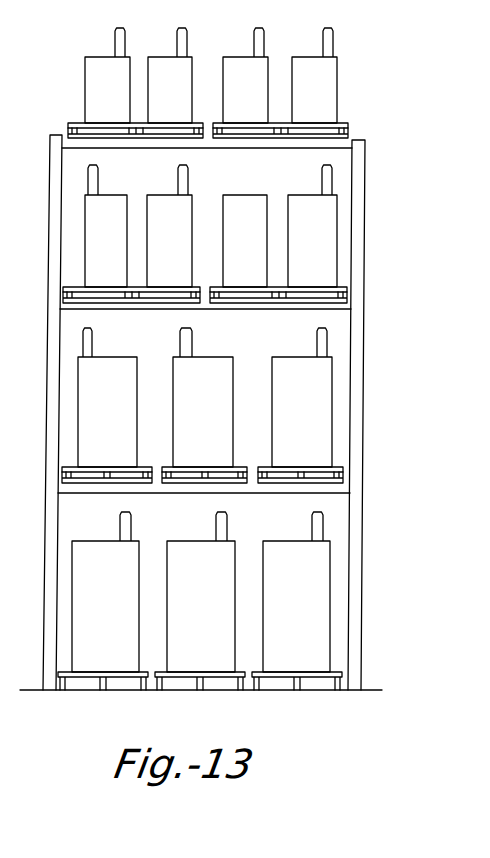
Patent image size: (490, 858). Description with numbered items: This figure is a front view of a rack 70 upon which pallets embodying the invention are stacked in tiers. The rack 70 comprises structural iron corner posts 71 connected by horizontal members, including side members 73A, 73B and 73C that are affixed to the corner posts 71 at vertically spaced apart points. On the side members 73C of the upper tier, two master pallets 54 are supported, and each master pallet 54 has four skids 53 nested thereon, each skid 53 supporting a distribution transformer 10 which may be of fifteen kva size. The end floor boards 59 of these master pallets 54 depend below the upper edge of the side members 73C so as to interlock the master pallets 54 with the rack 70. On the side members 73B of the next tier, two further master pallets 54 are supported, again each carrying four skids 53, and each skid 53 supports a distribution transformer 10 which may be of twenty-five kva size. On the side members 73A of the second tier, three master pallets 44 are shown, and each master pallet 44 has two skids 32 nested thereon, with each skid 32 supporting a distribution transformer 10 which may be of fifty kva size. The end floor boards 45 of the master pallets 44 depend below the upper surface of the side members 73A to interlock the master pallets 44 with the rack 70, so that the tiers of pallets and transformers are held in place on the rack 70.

The distribution transformer 10 is at (160, 57).
The skid 32 is at (98, 466).
The master pallet 44 is at (60, 470).
The end floor board 45 is at (197, 505).
The skid 53 is at (98, 122).
The master pallet 54 is at (68, 127).
The end floor board 59 is at (228, 160).
The rack 70 is at (214, 412).
The corner post 71 is at (47, 356).
The side member 73A is at (262, 512).
The side member 73B is at (252, 330).
The side member 73C is at (266, 162).